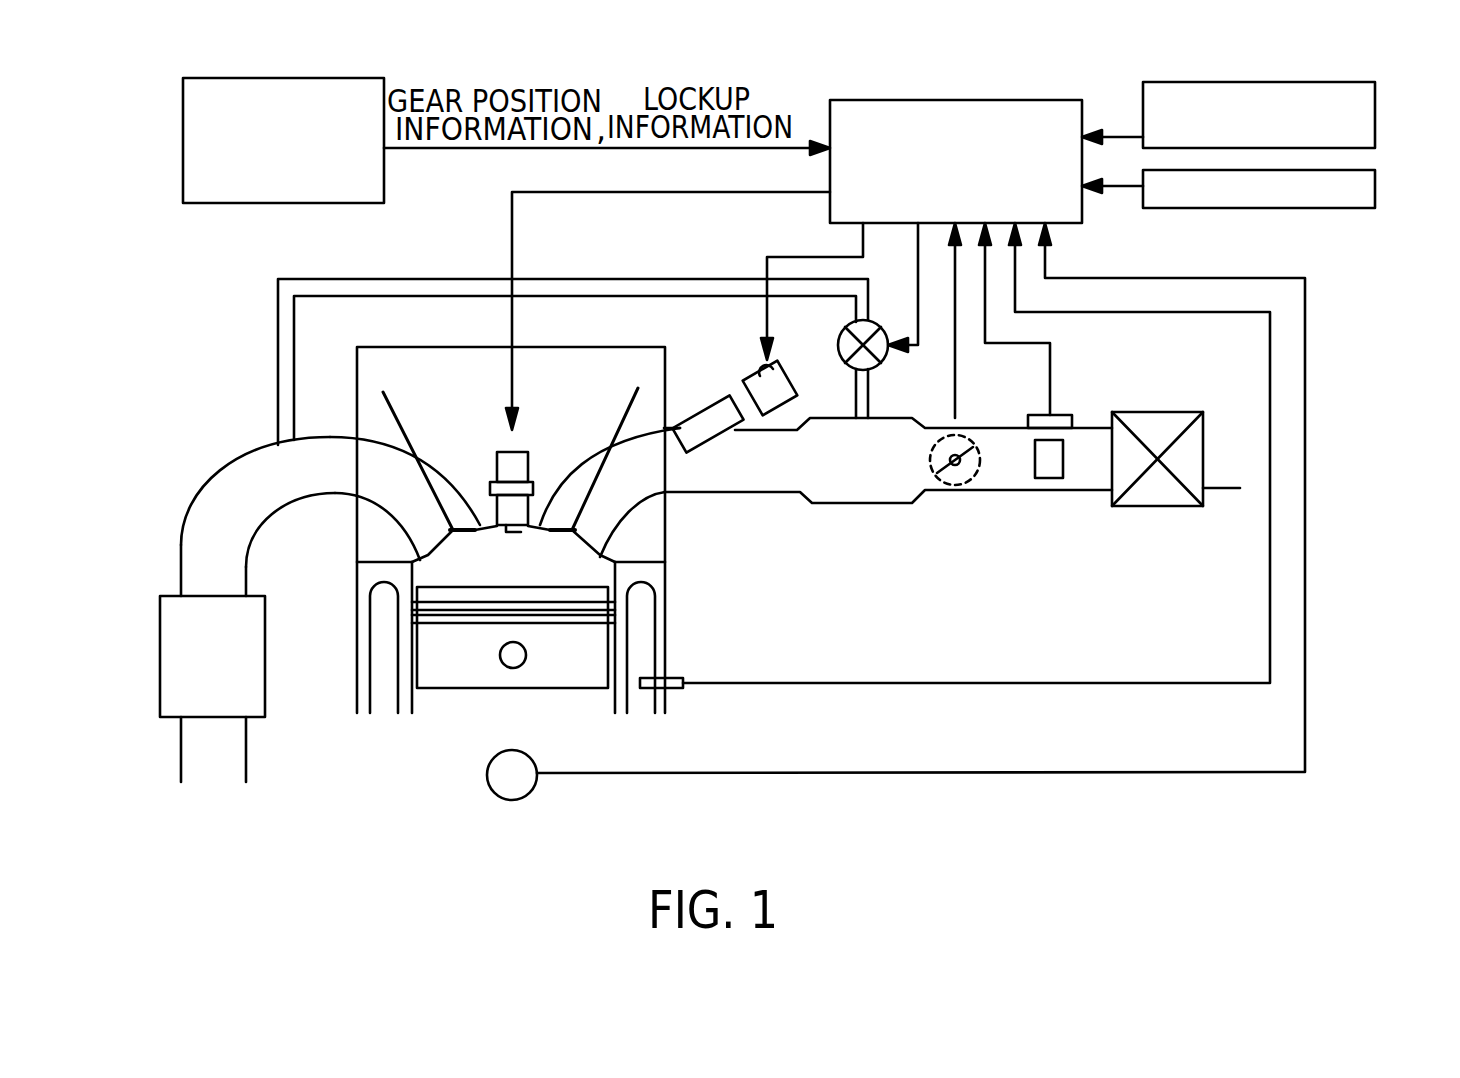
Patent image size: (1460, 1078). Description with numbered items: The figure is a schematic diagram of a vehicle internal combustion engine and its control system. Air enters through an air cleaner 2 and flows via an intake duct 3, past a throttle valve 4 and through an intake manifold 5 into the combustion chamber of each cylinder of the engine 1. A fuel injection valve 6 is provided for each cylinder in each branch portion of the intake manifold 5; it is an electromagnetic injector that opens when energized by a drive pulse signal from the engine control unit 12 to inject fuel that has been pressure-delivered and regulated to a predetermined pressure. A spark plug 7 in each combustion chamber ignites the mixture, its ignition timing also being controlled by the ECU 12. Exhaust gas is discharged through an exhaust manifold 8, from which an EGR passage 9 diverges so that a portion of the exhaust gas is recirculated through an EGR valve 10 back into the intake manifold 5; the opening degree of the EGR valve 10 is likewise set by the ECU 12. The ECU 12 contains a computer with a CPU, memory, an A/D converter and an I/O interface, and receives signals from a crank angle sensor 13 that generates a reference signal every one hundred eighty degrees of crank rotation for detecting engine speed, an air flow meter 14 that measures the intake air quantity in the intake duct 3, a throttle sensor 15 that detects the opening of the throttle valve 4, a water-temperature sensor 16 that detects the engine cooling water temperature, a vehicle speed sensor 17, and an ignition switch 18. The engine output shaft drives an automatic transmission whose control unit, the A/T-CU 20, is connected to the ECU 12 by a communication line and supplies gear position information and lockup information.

The engine 1 is at (333, 578).
The air cleaner 2 is at (1153, 508).
The intake duct 3 is at (1057, 492).
The throttle valve 4 is at (958, 472).
The intake manifold 5 is at (820, 505).
The fuel injection valve 6 is at (748, 382).
The spark plug 7 is at (530, 456).
The exhaust manifold 8 is at (248, 455).
The EGR passage 9 is at (378, 278).
The EGR valve 10 is at (836, 345).
The engine control unit (ECU) 12 is at (935, 100).
The crank angle sensor 13 is at (488, 770).
The air flow meter 14 is at (1068, 415).
The throttle sensor 15 is at (976, 418).
The water-temperature sensor 16 is at (685, 675).
The vehicle speed sensor 17 is at (1378, 118).
The ignition switch (IG/SW) 18 is at (1378, 170).
The automatic transmission control unit (A/T-CU) 20 is at (183, 92).